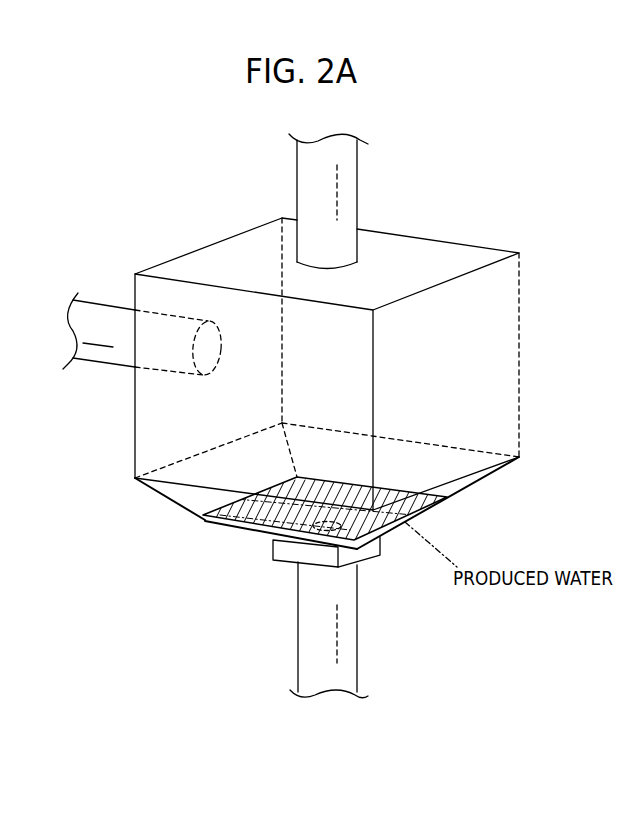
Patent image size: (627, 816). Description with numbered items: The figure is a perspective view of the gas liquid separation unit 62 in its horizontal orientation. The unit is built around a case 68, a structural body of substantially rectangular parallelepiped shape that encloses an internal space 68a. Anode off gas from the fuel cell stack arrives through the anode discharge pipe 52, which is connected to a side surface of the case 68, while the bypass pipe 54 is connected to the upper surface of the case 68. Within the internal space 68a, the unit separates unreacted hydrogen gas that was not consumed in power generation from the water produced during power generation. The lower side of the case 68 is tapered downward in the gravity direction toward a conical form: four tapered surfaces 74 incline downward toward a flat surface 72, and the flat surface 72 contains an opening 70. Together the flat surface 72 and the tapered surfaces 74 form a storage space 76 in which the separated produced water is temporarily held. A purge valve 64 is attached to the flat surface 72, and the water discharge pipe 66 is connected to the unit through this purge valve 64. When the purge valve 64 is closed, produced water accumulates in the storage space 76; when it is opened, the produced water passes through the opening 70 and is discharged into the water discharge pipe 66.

The anode discharge pipe 52 is at (100, 302).
The bypass pipe 54 is at (307, 167).
The gas liquid separation unit 62 is at (169, 133).
The purge valve 64 is at (370, 552).
The water discharge pipe 66 is at (298, 657).
The case 68 is at (418, 222).
The internal space 68a is at (457, 352).
The opening 70 is at (326, 531).
The flat surface 72 is at (211, 524).
The tapered surfaces 74 is at (472, 464).
The storage space 76 is at (334, 509).